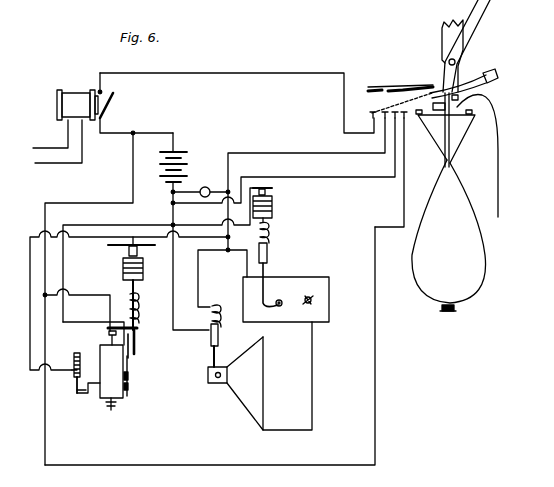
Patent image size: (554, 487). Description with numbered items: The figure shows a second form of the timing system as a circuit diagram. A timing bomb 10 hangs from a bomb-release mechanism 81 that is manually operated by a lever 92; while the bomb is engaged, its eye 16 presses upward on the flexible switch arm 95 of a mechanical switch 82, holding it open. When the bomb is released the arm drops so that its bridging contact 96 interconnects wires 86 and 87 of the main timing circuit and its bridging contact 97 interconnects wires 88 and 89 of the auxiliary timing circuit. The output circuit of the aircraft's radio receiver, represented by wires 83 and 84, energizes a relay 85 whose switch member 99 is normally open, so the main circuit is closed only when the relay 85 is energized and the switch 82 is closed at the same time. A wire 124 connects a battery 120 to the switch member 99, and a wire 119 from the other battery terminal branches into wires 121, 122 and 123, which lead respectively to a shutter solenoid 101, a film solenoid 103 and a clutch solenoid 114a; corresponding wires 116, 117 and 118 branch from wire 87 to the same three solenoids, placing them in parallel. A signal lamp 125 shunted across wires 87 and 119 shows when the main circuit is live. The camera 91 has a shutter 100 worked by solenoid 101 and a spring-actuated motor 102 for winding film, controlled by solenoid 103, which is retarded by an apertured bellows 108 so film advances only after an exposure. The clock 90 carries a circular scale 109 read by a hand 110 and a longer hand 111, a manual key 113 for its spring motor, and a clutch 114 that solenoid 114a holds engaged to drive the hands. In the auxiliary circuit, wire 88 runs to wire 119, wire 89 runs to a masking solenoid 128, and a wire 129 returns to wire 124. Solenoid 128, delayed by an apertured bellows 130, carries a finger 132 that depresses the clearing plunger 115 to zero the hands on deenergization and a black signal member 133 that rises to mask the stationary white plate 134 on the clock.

The timing bomb 10 is at (470, 302).
The eye 16 is at (460, 105).
The bomb-release mechanism 81 is at (470, 61).
The mechanical switch 82 is at (358, 80).
The wire 83 is at (33, 148).
The wire 84 is at (35, 163).
The relay 85 is at (73, 88).
The wire 86 is at (276, 73).
The wire 87 is at (282, 153).
The wire 88 is at (373, 177).
The wire 89 is at (376, 335).
The clock 90 is at (115, 396).
The camera 91 is at (312, 375).
The lever 92 is at (484, 11).
The flexible switch arm 95 is at (420, 86).
The bridging contact 96 is at (376, 87).
The bridging contact 97 is at (398, 88).
The switch member 99 is at (115, 97).
The shutter 100 is at (218, 384).
The shutter solenoid 101 is at (219, 312).
The spring-actuated motor 102 is at (310, 277).
The film solenoid 103 is at (268, 241).
The apertured bellows 108 is at (273, 205).
The circular scale 109 is at (126, 390).
The clock hand 110 is at (129, 377).
The clock hand 111 is at (130, 386).
The manual key 113 is at (112, 410).
The clutch 114 is at (97, 398).
The clutch solenoid 114a is at (77, 385).
The clearing plunger 115 is at (109, 339).
The wire 116 is at (198, 286).
The wire 117 is at (246, 252).
The wire 118 is at (107, 236).
The wire 119 is at (172, 205).
The battery 120 is at (180, 150).
The wire 121 is at (208, 329).
The wire 122 is at (192, 205).
The wire 123 is at (102, 203).
The wire 124 is at (158, 133).
The signal lamp 125 is at (206, 187).
The masking solenoid 128 is at (137, 316).
The wire 129 is at (60, 203).
The apertured bellows 130 is at (122, 273).
The finger 132 is at (128, 323).
The signal member 133 is at (131, 351).
The stationary white plate 134 is at (137, 343).